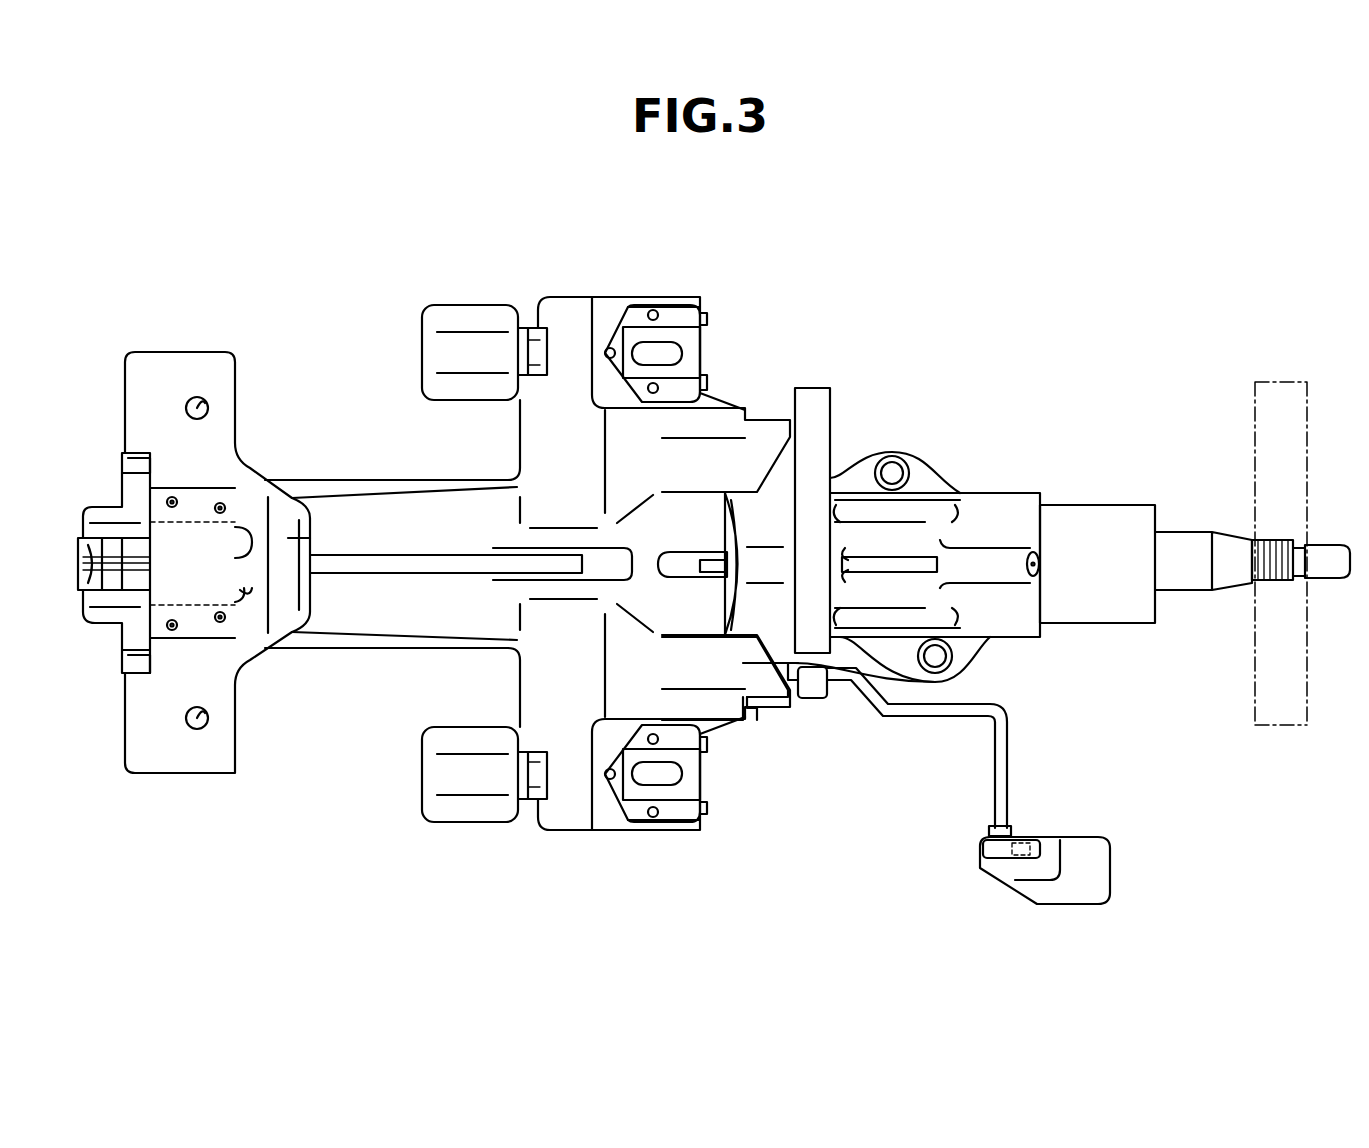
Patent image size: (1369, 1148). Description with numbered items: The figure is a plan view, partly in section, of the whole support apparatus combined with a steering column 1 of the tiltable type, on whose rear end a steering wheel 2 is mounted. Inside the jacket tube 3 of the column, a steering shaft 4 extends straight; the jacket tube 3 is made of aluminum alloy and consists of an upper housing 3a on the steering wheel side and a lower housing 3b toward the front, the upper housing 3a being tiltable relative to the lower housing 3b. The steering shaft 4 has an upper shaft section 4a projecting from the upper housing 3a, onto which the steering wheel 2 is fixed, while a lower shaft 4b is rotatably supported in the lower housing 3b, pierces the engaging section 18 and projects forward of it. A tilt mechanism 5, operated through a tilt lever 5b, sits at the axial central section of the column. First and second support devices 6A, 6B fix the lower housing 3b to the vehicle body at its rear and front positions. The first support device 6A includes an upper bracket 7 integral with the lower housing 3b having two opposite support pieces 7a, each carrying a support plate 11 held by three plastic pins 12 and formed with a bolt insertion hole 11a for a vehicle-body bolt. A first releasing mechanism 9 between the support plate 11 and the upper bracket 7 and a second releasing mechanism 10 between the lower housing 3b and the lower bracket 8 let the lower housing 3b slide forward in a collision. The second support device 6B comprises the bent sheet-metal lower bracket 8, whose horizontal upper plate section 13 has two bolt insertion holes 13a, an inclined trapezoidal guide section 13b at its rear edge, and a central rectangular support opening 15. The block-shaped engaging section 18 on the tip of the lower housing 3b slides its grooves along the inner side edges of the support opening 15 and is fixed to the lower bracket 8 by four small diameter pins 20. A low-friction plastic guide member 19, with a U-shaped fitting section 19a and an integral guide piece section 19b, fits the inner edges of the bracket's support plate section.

The steering column 1 is at (988, 494).
The steering wheel 2 is at (1283, 402).
The jacket tube 3 is at (966, 492).
The upper housing 3a is at (1025, 506).
The lower housing 3b is at (333, 482).
The steering shaft 4 is at (1176, 552).
The upper shaft section 4a is at (1270, 540).
The lower shaft 4b is at (110, 577).
The tilt mechanism 5 is at (820, 705).
The tilt lever 5b is at (920, 710).
The first support device 6A is at (740, 330).
The second support device 6B is at (170, 347).
The upper bracket 7 is at (557, 297).
The support piece 7a is at (605, 313).
The lower bracket 8 is at (160, 352).
The first releasing mechanism 9 is at (672, 295).
The second releasing mechanism 10 is at (244, 450).
The support plate 11 is at (678, 320).
The bolt insertion hole 11a is at (675, 350).
The pin 12 is at (653, 313).
The upper plate section 13 is at (172, 760).
The bolt insertion hole 13a is at (197, 400).
The guide section 13b is at (310, 538).
The support opening 15 is at (250, 595).
The engaging section 18 is at (246, 578).
The guide member 19 is at (114, 634).
The fitting section 19a is at (130, 455).
The guide piece section 19b is at (96, 520).
The small diameter pin 20 is at (172, 498).